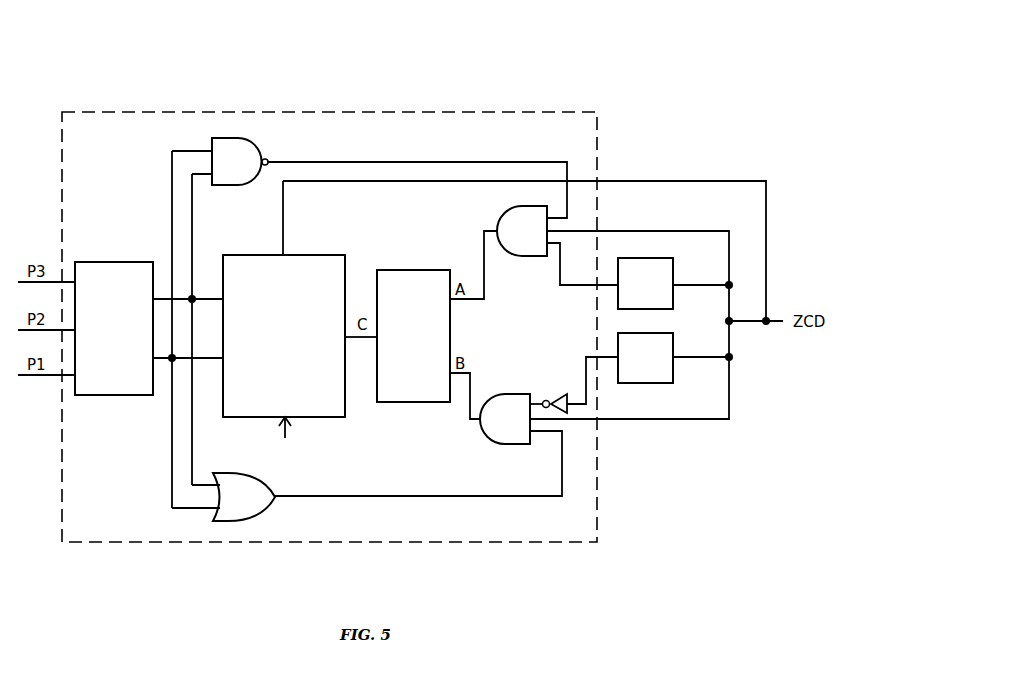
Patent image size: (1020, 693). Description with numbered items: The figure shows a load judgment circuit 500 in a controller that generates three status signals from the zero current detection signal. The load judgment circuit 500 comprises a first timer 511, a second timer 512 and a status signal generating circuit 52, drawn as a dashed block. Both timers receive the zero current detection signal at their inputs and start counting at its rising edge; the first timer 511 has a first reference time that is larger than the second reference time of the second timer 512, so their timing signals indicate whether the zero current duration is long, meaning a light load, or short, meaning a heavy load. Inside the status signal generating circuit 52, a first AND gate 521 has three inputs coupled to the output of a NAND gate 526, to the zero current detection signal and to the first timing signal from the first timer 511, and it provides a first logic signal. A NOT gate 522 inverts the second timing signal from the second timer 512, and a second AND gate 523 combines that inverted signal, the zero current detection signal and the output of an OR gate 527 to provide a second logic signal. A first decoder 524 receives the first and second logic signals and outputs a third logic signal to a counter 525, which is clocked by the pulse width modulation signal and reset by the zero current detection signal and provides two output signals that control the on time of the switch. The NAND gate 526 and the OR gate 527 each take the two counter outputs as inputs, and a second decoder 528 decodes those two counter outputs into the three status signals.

The load judgment circuit 500 is at (738, 76).
The status signal generating circuit 52 is at (590, 111).
The first timer 511 is at (673, 277).
The second timer 512 is at (673, 348).
The first AND gate 521 is at (520, 256).
The NOT gate 522 is at (565, 393).
The second AND gate 523 is at (496, 394).
The first decoder 524 is at (417, 270).
The counter 525 is at (345, 255).
The NAND gate 526 is at (257, 146).
The OR gate 527 is at (258, 512).
The second decoder 528 is at (105, 262).